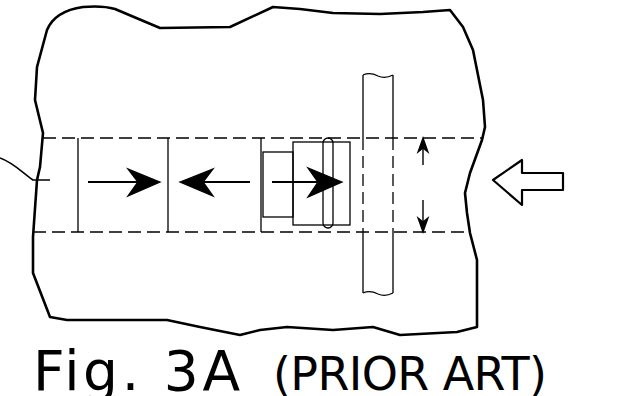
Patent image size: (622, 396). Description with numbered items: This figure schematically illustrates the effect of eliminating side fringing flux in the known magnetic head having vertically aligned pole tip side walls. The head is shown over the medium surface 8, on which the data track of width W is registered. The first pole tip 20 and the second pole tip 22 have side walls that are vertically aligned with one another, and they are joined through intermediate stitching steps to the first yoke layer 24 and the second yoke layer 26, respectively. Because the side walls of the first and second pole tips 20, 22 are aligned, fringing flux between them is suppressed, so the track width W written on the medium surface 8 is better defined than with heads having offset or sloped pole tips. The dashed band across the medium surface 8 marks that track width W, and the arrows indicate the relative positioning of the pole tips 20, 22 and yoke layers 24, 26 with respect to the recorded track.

The medium surface 8 is at (448, 78).
The first pole tip 20 is at (342, 138).
The second pole tip 22 is at (303, 142).
The first yoke layer 24 is at (373, 75).
The second yoke layer 26 is at (275, 152).